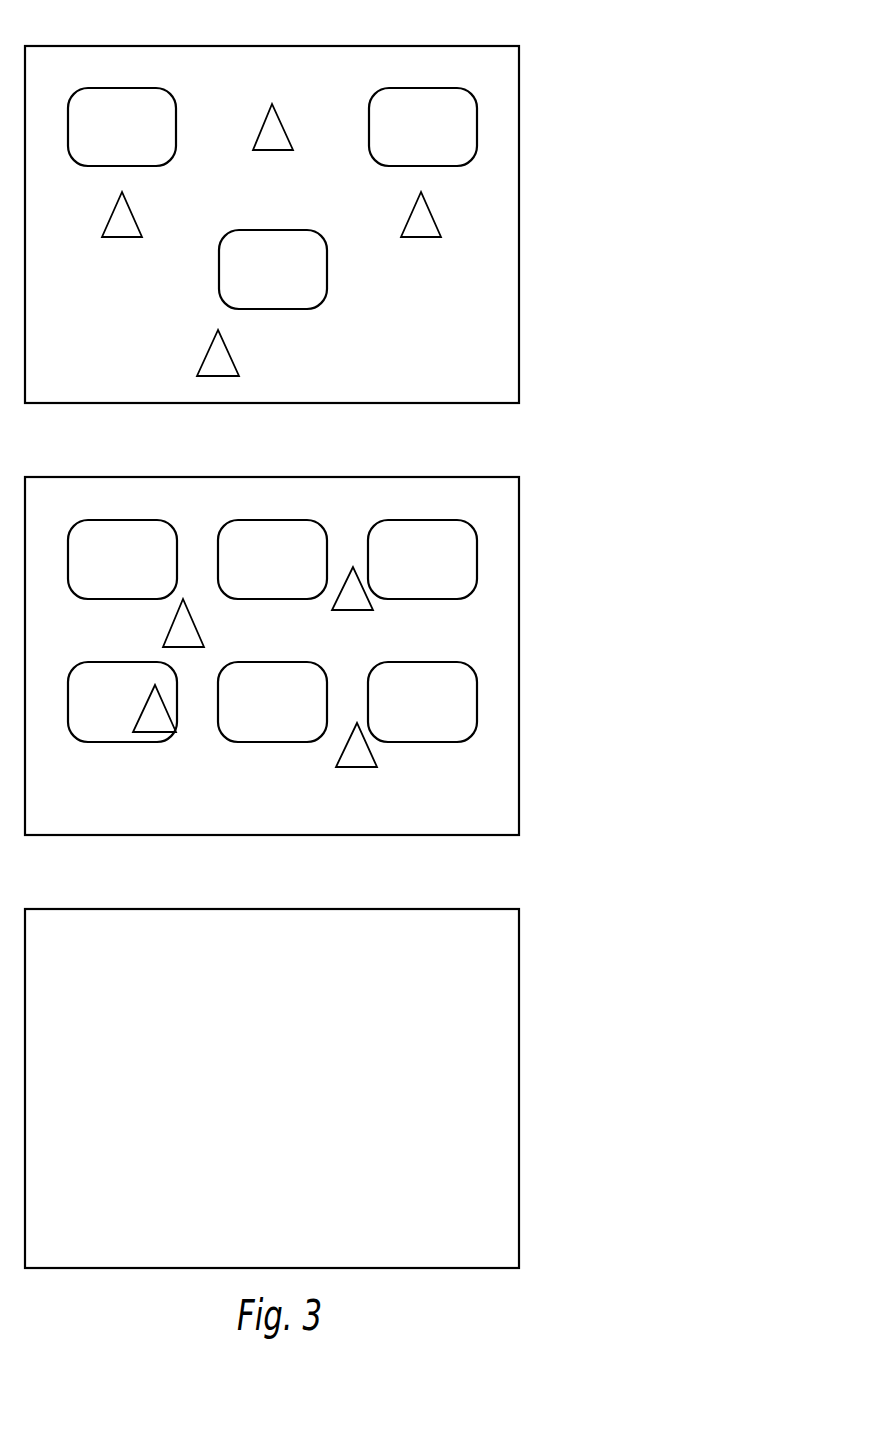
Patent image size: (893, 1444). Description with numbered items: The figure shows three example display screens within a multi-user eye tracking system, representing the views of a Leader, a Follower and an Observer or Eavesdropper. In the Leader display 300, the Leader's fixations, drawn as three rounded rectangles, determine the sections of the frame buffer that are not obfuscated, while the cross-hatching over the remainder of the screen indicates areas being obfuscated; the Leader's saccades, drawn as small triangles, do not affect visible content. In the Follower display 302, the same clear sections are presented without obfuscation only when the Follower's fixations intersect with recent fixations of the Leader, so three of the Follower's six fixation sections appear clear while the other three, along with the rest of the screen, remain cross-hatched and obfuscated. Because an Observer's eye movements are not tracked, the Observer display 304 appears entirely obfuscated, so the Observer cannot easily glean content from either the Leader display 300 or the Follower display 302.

The Leader display 300 is at (497, 45).
The Follower display 302 is at (497, 476).
The Observer display 304 is at (497, 908).